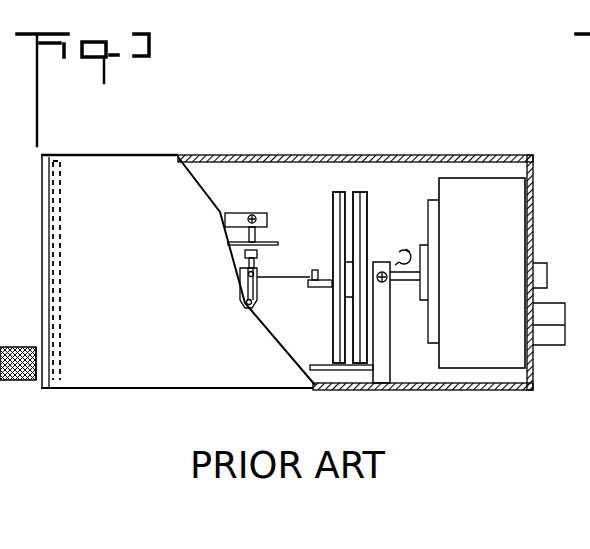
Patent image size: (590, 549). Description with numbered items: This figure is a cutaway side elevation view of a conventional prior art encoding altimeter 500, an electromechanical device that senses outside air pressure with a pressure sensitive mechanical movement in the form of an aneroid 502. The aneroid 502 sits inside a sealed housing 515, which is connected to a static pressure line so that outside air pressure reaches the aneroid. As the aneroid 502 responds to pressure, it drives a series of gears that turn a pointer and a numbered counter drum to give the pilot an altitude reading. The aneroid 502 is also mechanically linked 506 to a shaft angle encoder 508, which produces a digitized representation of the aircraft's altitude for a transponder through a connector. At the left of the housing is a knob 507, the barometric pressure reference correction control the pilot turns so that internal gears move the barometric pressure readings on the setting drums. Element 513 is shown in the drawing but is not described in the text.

The encoding altimeter 500 is at (462, 116).
The aneroid 502 is at (331, 245).
The mechanical link 506 is at (392, 282).
The knob 507 is at (0, 405).
The shaft angle encoder 508 is at (488, 242).
The printed circuit board 513 is at (60, 208).
The sealed housing 515 is at (396, 155).